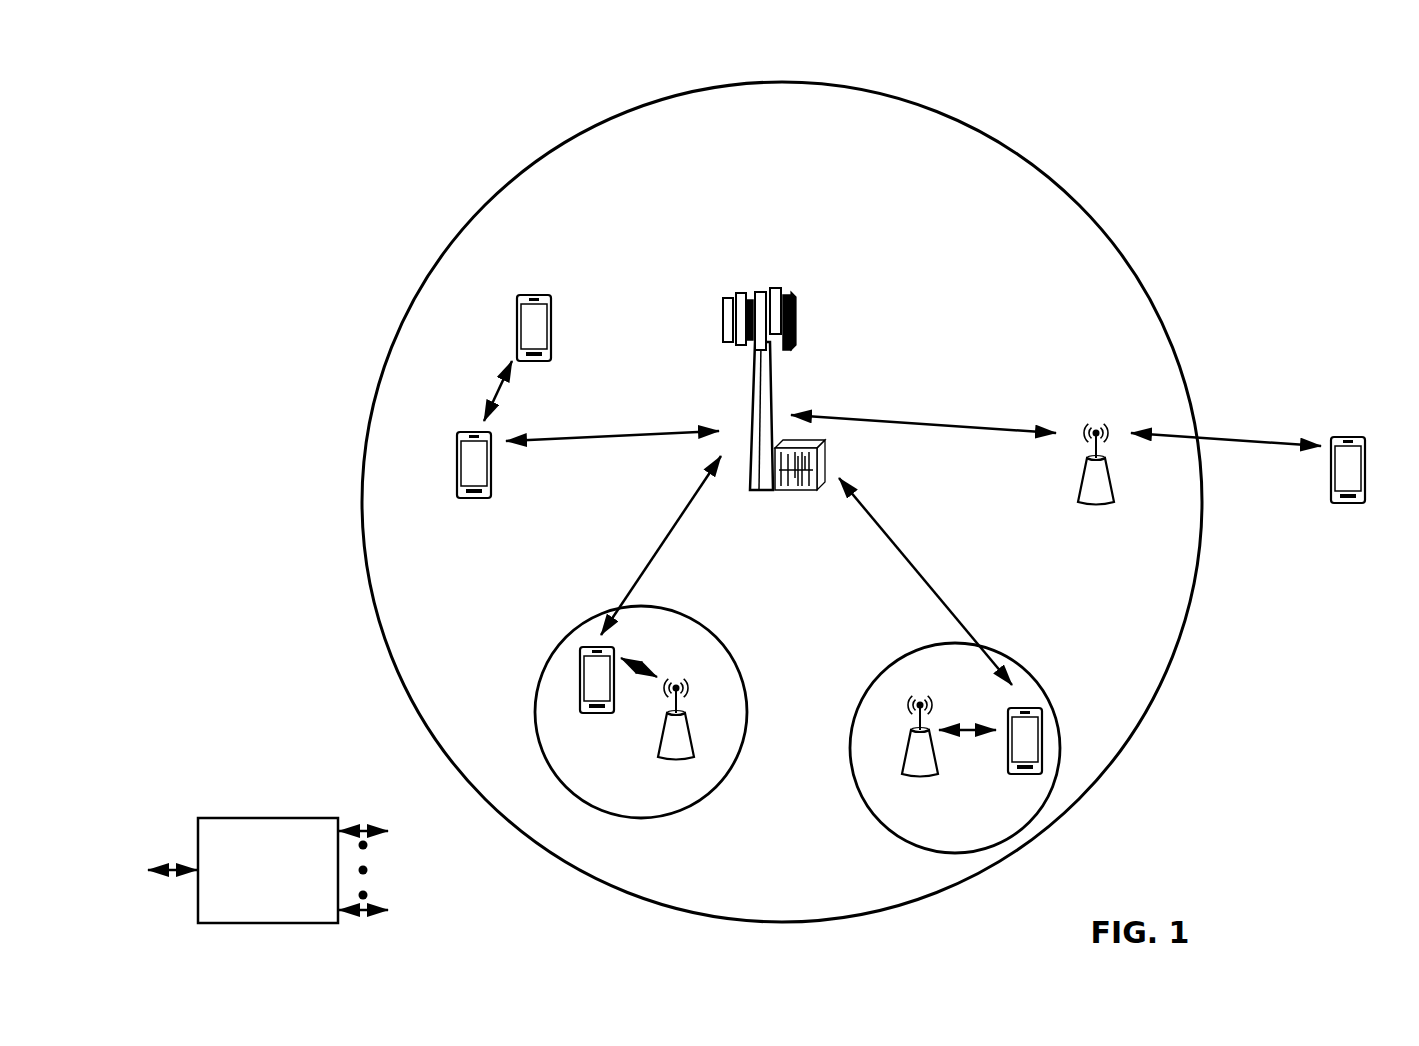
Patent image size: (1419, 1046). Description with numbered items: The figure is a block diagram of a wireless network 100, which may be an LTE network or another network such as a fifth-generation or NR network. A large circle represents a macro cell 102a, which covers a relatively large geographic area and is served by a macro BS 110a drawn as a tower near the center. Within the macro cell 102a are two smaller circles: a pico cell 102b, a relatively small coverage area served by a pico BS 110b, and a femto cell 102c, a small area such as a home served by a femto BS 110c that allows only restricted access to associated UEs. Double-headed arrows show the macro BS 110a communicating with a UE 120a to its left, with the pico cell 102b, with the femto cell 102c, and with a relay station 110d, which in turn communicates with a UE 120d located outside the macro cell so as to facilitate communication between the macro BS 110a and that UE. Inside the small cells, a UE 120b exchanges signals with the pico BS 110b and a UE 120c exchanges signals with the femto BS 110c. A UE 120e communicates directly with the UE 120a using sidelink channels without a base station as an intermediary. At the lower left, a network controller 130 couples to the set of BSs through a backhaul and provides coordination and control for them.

The wireless network 100 is at (254, 80).
The macro cell 102a is at (1060, 190).
The pico cell 102b is at (736, 652).
The femto cell 102c is at (892, 662).
The macro BS 110a is at (770, 283).
The pico BS 110b is at (700, 745).
The femto BS 110c is at (906, 760).
The relay station 110d is at (1096, 426).
The UE 120a is at (457, 462).
The UE 120b is at (585, 714).
The UE 120c is at (1010, 776).
The UE 120d is at (1361, 435).
The UE 120e is at (517, 319).
The network controller 130 is at (267, 818).